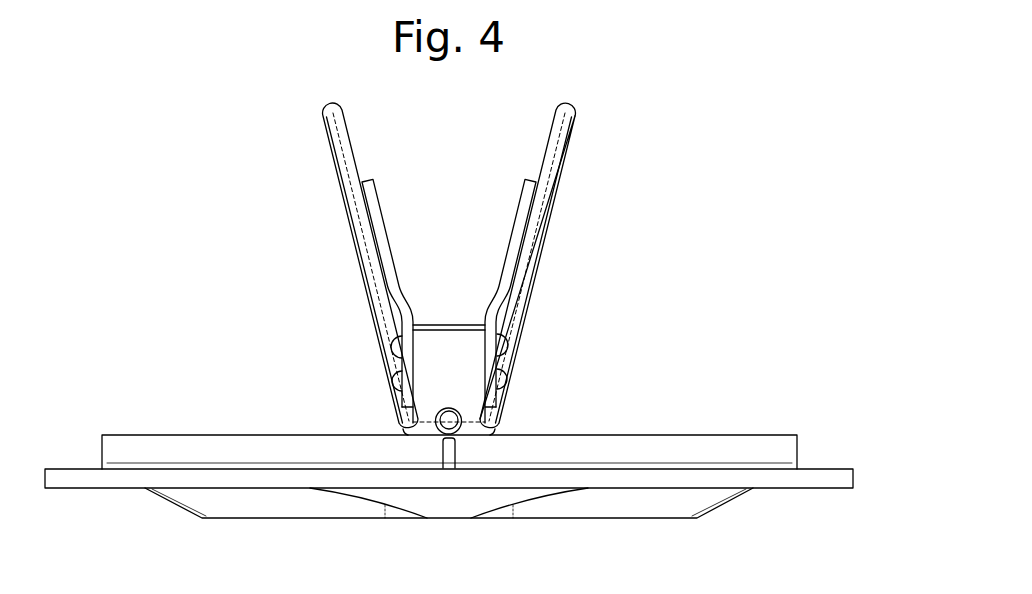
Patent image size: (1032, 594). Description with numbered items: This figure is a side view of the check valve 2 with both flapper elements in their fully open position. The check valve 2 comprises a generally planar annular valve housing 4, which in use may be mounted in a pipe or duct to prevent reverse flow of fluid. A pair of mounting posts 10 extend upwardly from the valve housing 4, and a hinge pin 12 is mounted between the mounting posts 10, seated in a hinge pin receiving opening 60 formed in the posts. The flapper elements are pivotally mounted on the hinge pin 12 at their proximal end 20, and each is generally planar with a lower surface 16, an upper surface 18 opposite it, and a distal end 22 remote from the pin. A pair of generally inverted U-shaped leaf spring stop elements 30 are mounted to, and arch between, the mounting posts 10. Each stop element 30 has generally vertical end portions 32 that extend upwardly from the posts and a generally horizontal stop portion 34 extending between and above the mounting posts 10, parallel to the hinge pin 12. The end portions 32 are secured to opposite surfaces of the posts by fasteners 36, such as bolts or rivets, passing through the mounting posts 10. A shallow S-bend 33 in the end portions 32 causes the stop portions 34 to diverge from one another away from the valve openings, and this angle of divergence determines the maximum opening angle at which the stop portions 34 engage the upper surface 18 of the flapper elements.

The check valve 2 is at (208, 128).
The valve housing 4 is at (833, 475).
The mounting posts 10 is at (462, 282).
The hinge pin 12 is at (459, 424).
The lower surface 16 is at (558, 193).
The upper surface 18 is at (562, 243).
The proximal end 20 is at (490, 431).
The distal end 22 is at (574, 110).
The leaf spring stop elements 30 is at (373, 185).
The end portions 32 is at (405, 343).
The S-bend 33 is at (494, 300).
The stop portion 34 is at (373, 212).
The fasteners 36 is at (395, 392).
The hinge pin receiving opening 60 is at (438, 425).